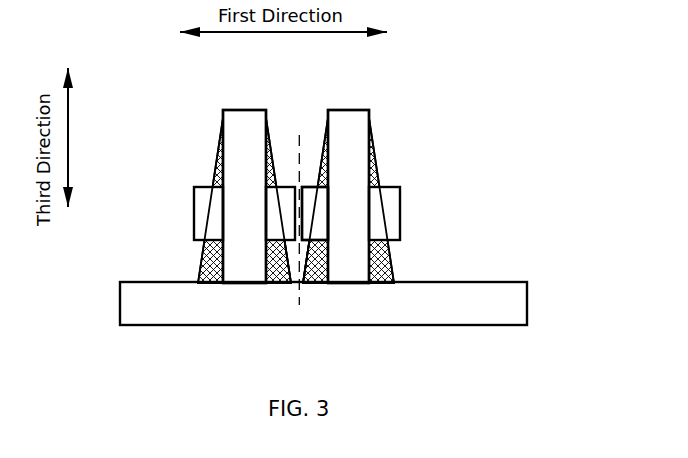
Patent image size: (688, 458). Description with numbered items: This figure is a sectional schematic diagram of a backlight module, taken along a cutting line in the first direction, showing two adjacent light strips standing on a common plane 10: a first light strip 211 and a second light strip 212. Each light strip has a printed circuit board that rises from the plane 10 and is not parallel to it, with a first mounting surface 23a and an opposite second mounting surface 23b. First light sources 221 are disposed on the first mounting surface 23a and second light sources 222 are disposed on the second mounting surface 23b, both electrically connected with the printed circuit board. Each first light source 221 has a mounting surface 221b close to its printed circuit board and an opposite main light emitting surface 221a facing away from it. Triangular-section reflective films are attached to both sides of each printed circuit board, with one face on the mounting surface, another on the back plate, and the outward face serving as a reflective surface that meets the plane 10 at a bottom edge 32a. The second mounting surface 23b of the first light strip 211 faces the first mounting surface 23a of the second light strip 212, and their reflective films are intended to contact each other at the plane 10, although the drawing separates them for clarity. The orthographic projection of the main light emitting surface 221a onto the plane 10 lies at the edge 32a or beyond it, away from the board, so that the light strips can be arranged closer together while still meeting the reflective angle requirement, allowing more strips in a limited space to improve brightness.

The plane 10 is at (483, 282).
The first light strip 211 is at (238, 110).
The second light strip 212 is at (352, 109).
The first mounting surface 23a is at (200, 263).
The second mounting surface 23b is at (270, 157).
The second light source 222 is at (280, 220).
The first light source 221 is at (313, 213).
The main light emitting surface 221a is at (330, 248).
The mounting surface 221b is at (330, 228).
The edge 32a is at (300, 283).